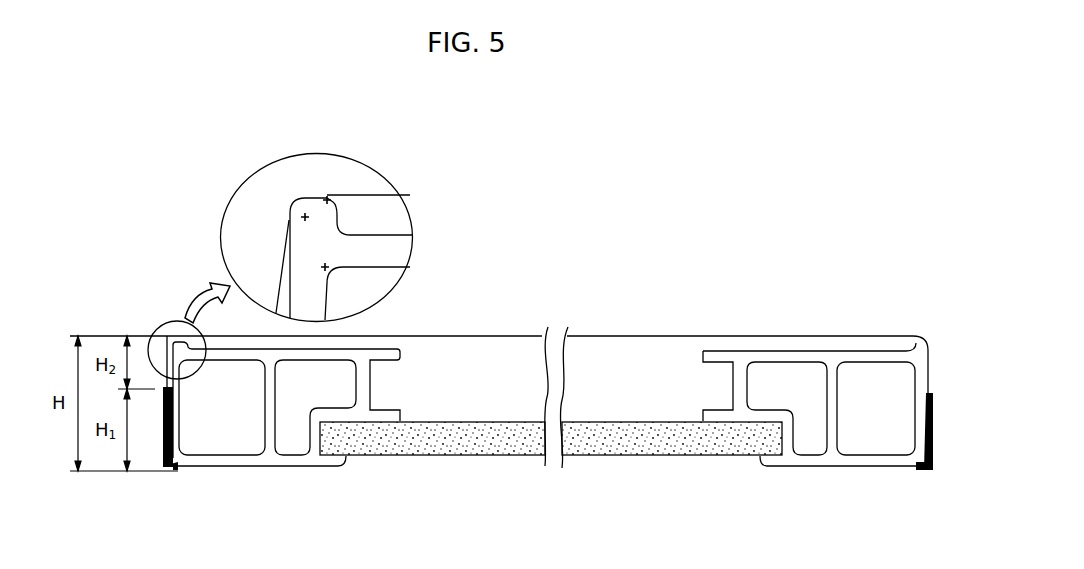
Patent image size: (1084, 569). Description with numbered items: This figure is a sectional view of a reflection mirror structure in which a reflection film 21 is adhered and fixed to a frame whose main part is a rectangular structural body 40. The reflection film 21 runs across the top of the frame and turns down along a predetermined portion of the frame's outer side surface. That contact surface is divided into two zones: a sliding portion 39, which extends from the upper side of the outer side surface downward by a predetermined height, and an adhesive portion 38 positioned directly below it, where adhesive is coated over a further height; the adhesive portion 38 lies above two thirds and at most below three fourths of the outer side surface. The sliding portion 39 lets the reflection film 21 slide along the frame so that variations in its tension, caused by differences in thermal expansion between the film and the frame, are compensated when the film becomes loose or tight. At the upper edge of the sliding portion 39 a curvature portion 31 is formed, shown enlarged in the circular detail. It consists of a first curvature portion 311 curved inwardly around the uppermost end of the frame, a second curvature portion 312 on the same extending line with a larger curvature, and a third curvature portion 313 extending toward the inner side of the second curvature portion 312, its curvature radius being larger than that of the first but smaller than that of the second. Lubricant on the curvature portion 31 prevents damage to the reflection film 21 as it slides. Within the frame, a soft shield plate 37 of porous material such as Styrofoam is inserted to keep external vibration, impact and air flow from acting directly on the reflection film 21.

The reflection film 21 is at (507, 335).
The curvature portion 31 is at (349, 199).
The first curvature portion 311 is at (325, 197).
The second curvature portion 312 is at (323, 265).
The third curvature portion 313 is at (300, 210).
The soft shield plate 37 is at (482, 440).
The adhesive portion 38 is at (162, 445).
The sliding portion 39 is at (160, 337).
The rectangular structural body 40 is at (172, 418).